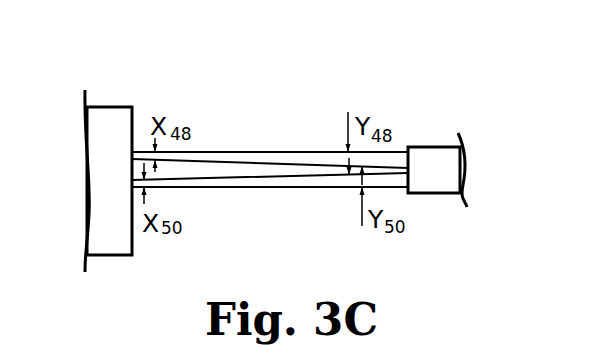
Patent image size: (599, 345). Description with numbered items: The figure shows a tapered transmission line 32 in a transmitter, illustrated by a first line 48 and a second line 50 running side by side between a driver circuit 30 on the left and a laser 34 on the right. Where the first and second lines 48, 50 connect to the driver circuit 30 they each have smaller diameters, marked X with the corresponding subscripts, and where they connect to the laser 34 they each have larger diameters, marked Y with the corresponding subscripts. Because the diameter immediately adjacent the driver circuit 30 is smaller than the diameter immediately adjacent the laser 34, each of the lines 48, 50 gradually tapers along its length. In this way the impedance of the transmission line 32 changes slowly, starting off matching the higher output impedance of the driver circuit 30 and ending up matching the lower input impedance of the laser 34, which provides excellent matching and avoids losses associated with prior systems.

The driver circuit 30 is at (102, 107).
The transmission line 32 is at (293, 86).
The laser 34 is at (428, 147).
The first line 48 is at (222, 152).
The second line 50 is at (230, 188).